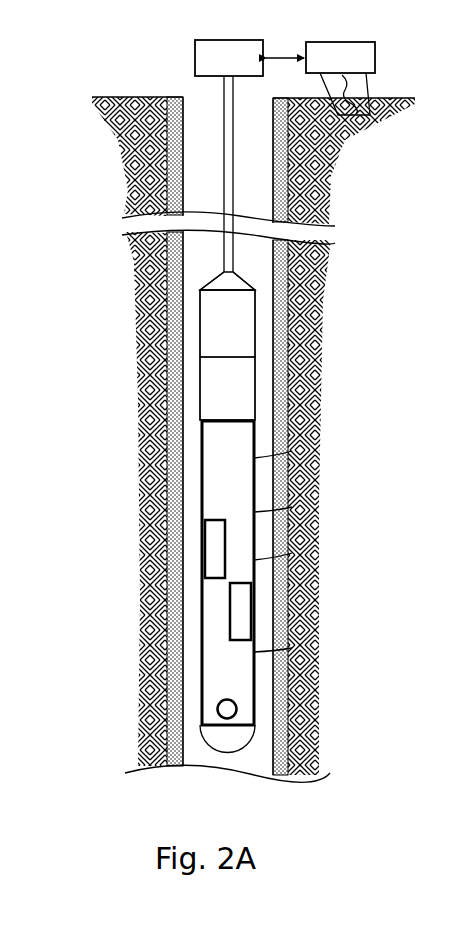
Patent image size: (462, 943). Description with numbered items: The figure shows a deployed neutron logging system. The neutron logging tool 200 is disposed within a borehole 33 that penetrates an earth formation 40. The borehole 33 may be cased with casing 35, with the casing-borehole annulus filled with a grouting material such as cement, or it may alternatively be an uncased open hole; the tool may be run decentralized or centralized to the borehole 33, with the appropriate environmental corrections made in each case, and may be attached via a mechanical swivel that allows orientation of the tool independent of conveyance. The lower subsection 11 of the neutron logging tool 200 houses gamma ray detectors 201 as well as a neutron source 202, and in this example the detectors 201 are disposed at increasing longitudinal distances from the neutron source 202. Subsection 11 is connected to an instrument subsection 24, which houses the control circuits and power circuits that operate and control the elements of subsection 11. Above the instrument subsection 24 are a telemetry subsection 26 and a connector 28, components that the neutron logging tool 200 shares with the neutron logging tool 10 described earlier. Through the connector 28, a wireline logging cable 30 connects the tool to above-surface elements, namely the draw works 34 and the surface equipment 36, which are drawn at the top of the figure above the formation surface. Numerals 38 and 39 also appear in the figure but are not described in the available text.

The neutron logging tool 10 is at (196, 330).
The subsection 11 is at (200, 490).
The instrument subsection 24 is at (255, 392).
The telemetry subsection 26 is at (255, 322).
The connector 28 is at (213, 286).
The wireline logging cable 30 is at (234, 174).
The borehole 33 is at (168, 386).
The draw works 34 is at (240, 40).
The casing 35 is at (176, 410).
The surface equipment 36 is at (354, 42).
The surface cable 38 is at (372, 98).
The earth surface 39 is at (105, 97).
The earth formation 40 is at (150, 152).
The neutron logging tool 200 is at (200, 564).
The gamma ray detectors 201 is at (258, 613).
The neutron source 202 is at (237, 706).